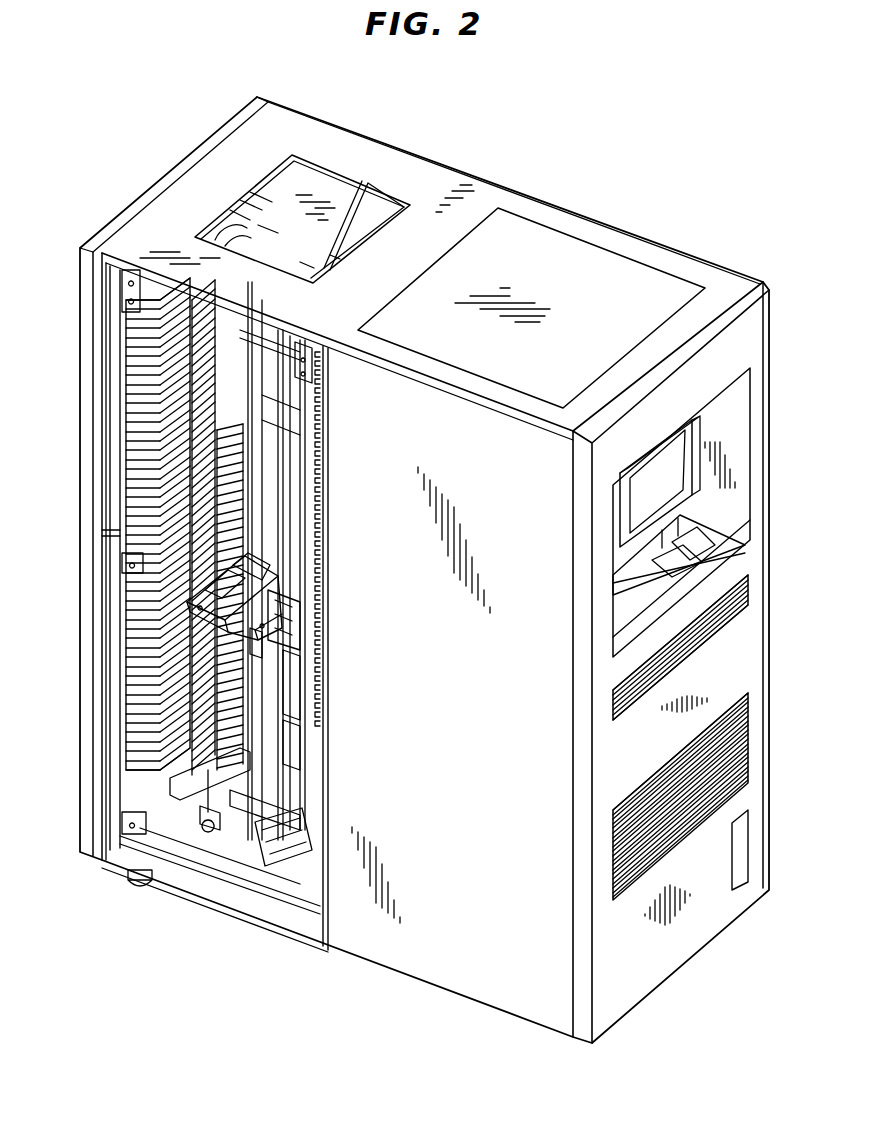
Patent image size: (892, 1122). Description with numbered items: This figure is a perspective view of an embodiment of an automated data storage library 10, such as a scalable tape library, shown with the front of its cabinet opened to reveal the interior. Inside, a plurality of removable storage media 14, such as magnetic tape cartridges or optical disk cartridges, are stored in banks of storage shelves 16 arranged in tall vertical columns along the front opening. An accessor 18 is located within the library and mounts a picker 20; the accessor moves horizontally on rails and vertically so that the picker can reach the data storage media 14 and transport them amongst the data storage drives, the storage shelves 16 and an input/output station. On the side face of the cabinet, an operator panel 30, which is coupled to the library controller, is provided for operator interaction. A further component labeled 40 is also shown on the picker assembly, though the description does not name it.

The automated tape library 10 is at (130, 140).
The tape cartridges 14 is at (130, 373).
The library frame / housing 16 is at (86, 528).
The tape drive 18 is at (205, 835).
The robotic picker carriage 20 is at (268, 618).
The operator control panel 30 is at (693, 519).
The gripper / picker 40 is at (240, 566).